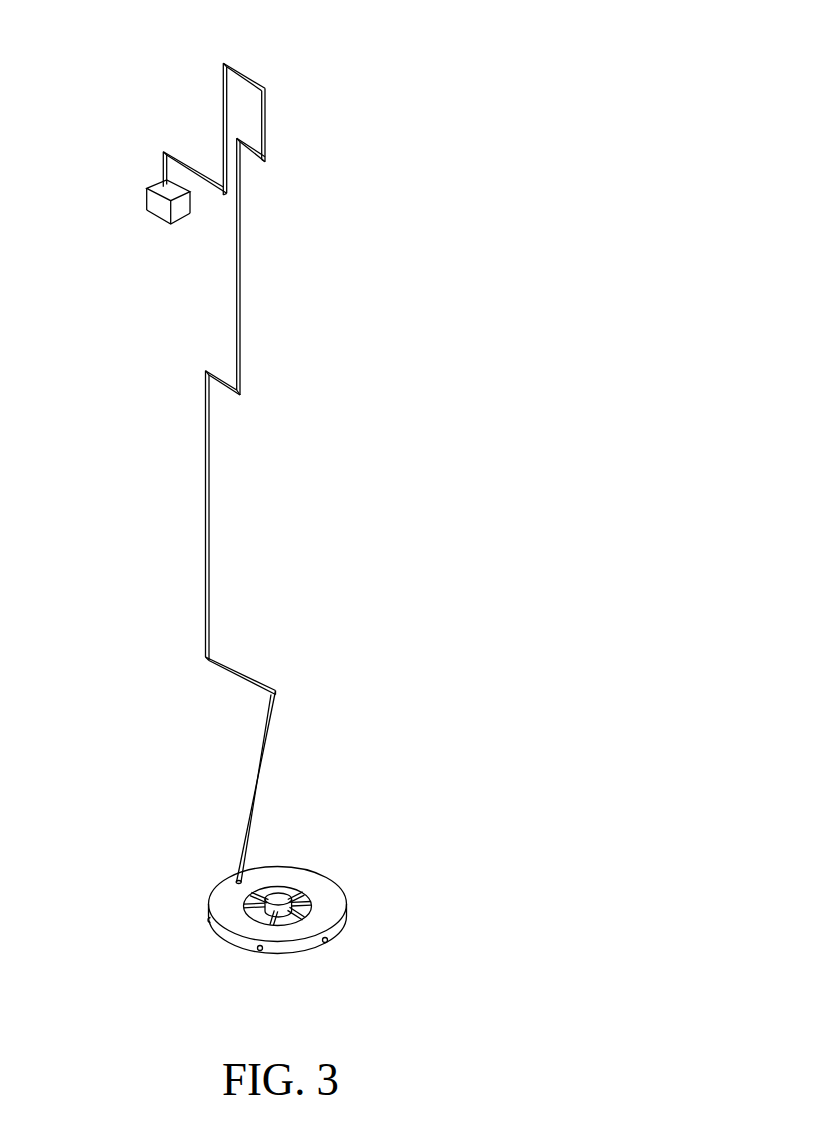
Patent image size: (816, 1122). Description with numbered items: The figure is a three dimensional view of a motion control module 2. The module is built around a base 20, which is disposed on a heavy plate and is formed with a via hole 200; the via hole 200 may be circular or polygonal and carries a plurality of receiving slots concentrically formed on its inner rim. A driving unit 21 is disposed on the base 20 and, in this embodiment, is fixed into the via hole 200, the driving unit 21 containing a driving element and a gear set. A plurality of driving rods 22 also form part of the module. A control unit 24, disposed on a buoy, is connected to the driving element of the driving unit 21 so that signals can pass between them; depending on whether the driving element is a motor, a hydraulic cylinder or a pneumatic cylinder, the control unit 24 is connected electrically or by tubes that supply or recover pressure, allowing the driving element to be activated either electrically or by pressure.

The motion control module 2 is at (338, 54).
The base 20 is at (330, 900).
The via hole 200 is at (302, 895).
The driving unit 21 is at (277, 901).
The driving rods 22 is at (303, 912).
The control unit 24 is at (160, 207).